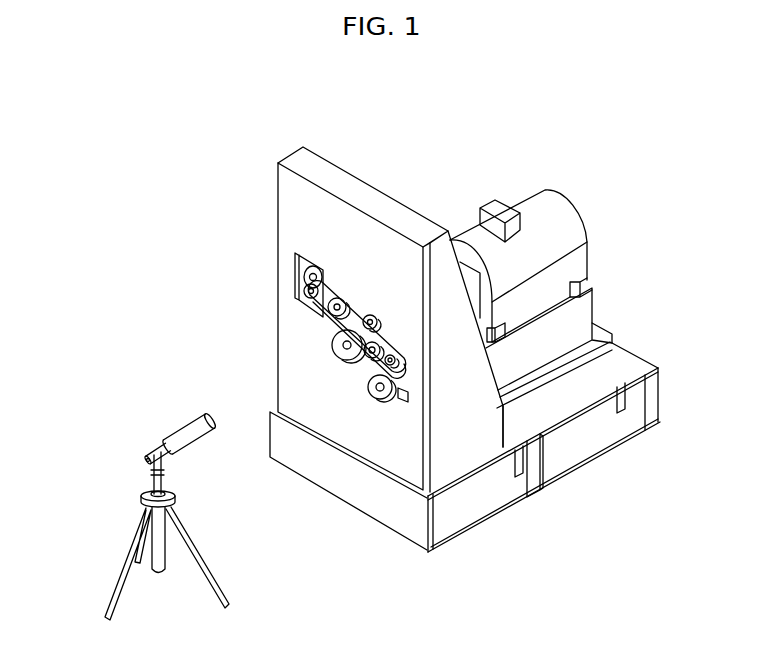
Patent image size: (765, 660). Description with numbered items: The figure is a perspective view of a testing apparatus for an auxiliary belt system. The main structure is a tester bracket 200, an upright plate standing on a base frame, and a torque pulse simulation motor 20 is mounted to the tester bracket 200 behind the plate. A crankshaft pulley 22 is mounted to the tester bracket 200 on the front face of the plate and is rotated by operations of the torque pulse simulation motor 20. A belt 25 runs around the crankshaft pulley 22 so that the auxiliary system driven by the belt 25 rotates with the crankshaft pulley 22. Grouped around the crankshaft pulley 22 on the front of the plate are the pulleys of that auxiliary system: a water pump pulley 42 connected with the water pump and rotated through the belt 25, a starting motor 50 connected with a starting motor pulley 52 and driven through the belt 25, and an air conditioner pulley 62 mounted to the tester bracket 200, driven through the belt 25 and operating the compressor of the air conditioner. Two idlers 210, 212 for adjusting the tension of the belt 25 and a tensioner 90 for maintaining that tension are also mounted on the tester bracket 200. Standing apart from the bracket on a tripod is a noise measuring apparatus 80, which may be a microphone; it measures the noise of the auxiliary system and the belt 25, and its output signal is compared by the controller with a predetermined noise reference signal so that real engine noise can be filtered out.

The tester bracket 200 is at (283, 201).
The torque pulse simulation motor 20 is at (550, 195).
The idler 210 is at (366, 314).
The idler 212 is at (392, 345).
The starting motor 50 is at (297, 280).
The starting motor pulley 52 is at (305, 299).
The water pump pulley 42 is at (327, 312).
The crankshaft pulley 22 is at (332, 348).
The belt 25 is at (343, 372).
The tensioner 90 is at (362, 368).
The air conditioner pulley 62 is at (385, 400).
The noise measuring apparatus 80 is at (180, 420).